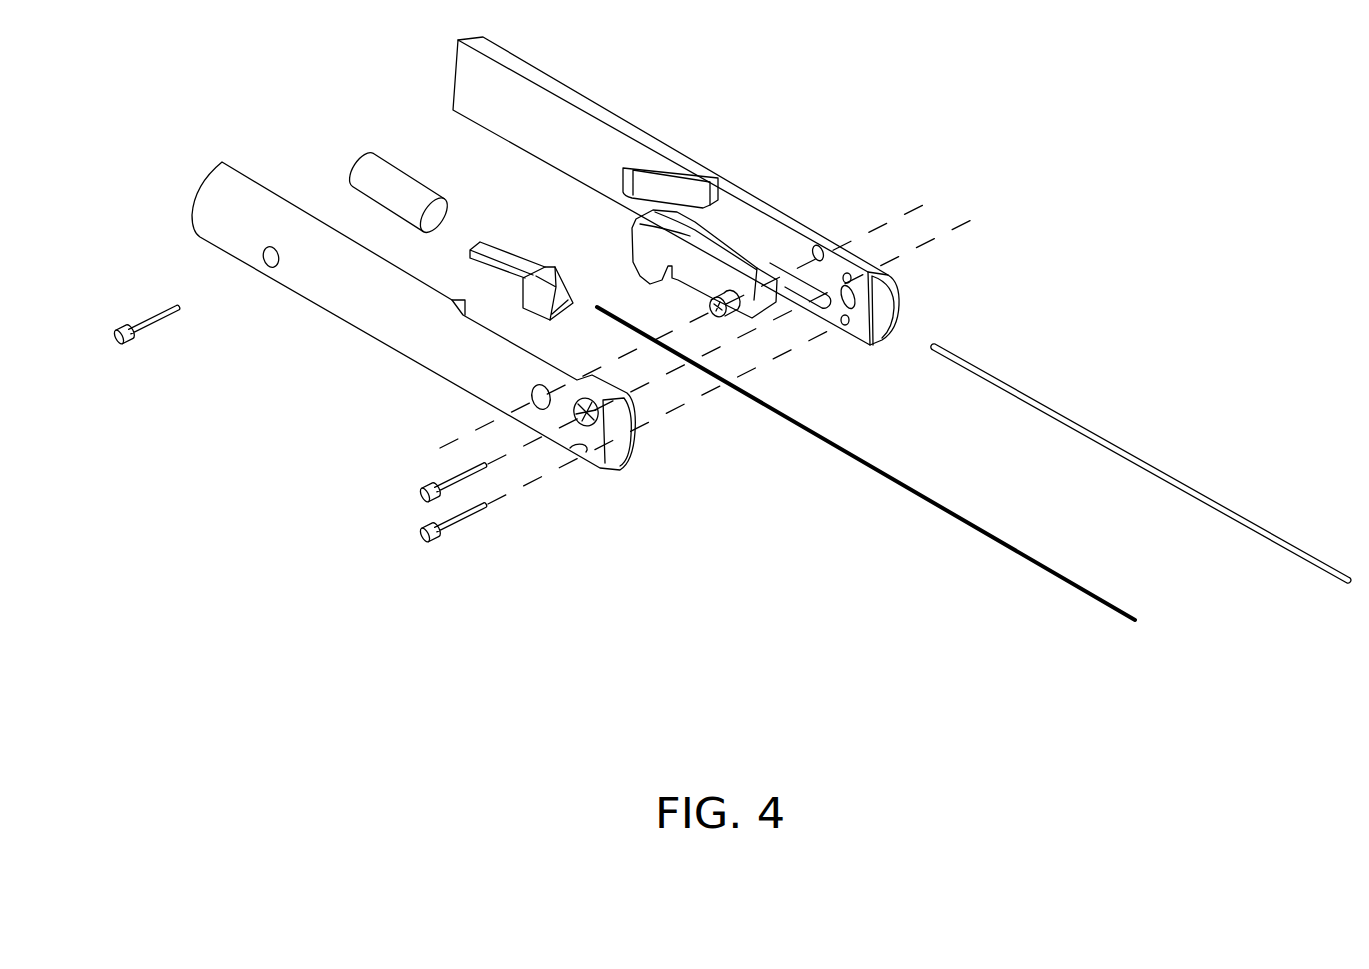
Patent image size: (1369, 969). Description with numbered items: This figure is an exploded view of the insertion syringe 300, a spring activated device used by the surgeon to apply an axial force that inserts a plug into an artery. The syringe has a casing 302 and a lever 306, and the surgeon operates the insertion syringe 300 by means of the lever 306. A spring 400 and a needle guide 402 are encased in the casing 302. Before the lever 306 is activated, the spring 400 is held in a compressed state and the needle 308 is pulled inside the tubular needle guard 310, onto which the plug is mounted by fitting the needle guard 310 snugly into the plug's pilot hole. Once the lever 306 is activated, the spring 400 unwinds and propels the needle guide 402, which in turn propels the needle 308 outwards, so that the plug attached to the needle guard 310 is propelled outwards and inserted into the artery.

The insertion syringe 300 is at (276, 490).
The casing 302 is at (583, 97).
The lever 306 is at (703, 238).
The needle 308 is at (1037, 555).
The needle guard 310 is at (1113, 443).
The spring 400 is at (372, 152).
The needle guide 402 is at (470, 248).